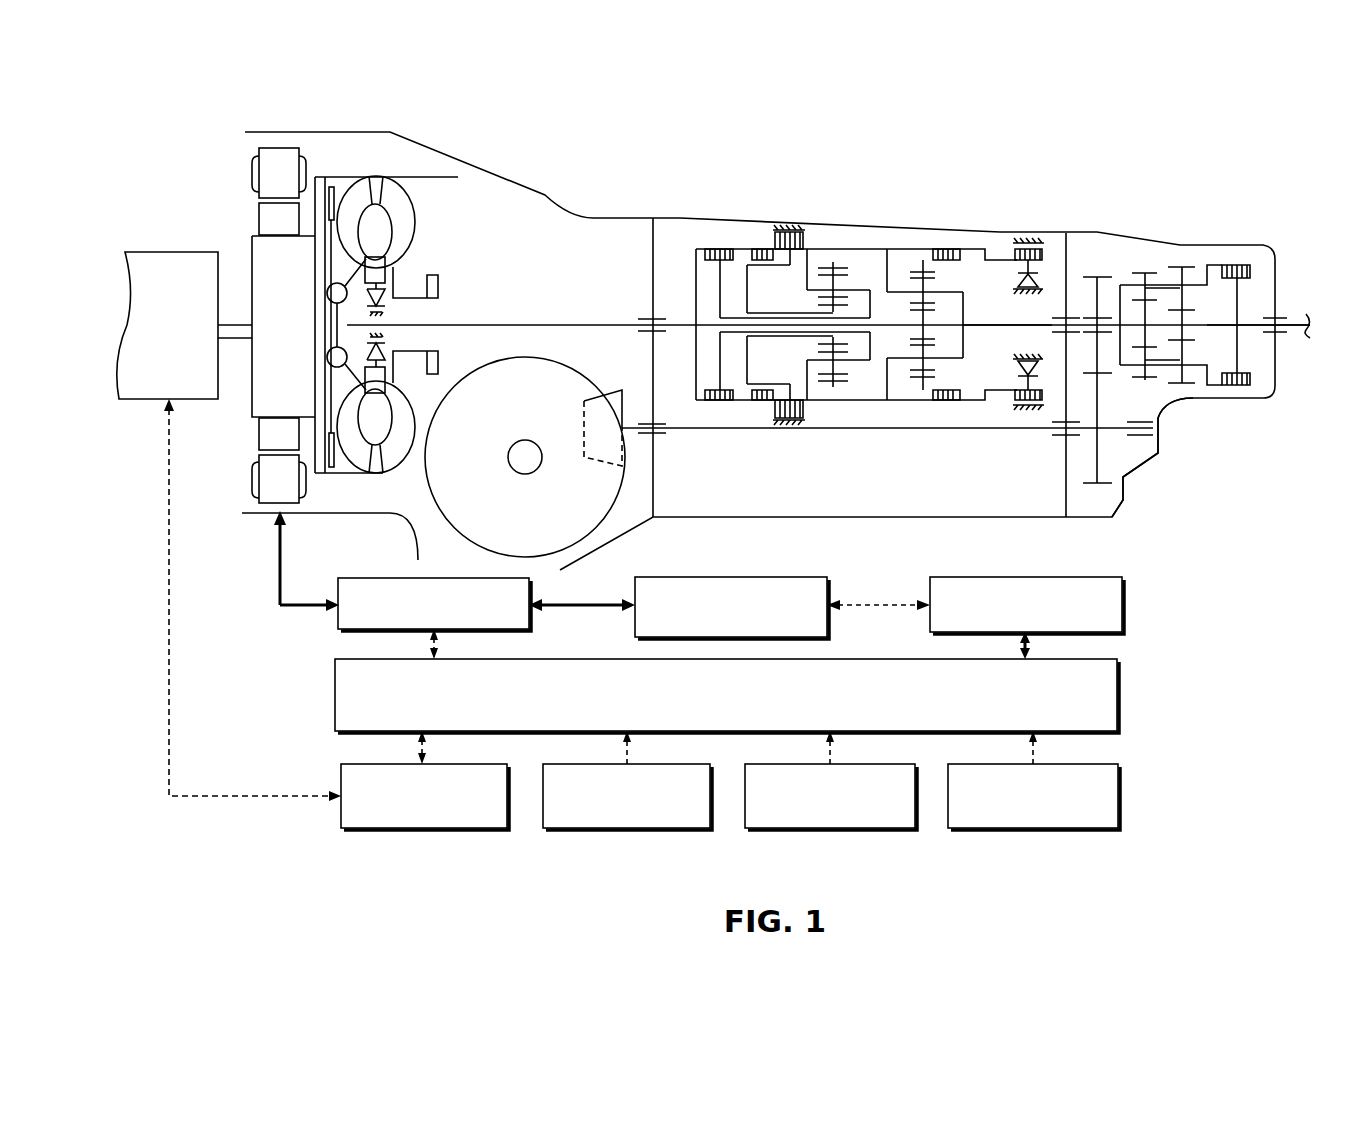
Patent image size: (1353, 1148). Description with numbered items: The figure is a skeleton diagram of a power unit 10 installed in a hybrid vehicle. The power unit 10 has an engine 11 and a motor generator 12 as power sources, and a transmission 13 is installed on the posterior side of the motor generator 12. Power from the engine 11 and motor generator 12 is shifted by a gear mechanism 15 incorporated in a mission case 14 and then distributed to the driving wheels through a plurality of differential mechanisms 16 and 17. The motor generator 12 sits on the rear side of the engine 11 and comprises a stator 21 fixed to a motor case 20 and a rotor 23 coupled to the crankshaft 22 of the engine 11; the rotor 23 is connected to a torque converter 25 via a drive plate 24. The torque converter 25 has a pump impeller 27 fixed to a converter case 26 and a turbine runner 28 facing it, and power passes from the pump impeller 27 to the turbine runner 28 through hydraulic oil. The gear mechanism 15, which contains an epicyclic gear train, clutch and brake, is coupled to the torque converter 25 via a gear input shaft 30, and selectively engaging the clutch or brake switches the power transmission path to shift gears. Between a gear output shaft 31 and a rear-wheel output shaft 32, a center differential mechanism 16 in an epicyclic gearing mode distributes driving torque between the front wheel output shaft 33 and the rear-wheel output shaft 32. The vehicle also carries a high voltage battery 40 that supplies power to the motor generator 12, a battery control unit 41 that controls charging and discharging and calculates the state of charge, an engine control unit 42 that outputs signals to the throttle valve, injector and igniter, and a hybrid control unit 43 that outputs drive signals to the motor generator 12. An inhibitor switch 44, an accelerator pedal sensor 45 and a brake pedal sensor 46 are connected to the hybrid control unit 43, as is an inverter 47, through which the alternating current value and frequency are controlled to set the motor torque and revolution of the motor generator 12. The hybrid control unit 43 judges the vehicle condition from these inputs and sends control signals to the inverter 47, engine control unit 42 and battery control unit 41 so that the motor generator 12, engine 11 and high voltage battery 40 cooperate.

The power unit 10 is at (835, 148).
The engine 11 is at (145, 250).
The motor generator 12 is at (238, 140).
The transmission 13 is at (982, 200).
The mission case 14 is at (610, 215).
The gear mechanism 15 is at (897, 235).
The center differential mechanism 16 is at (1180, 410).
The differential mechanism 17 is at (572, 350).
The motor case 20 is at (260, 131).
The stator 21 is at (258, 183).
The crankshaft 22 is at (236, 323).
The rotor 23 is at (258, 221).
The drive plate 24 is at (315, 176).
The torque converter 25 is at (405, 170).
The converter case 26 is at (350, 175).
The pump impeller 27 is at (400, 215).
The turbine runner 28 is at (362, 475).
The gear input shaft 30 is at (515, 322).
The gear output shaft 31 is at (992, 322).
The rear-wheel output shaft 32 is at (1248, 327).
The front wheel output shaft 33 is at (862, 430).
The high voltage battery 40 is at (783, 577).
The battery control unit 41 is at (1088, 577).
The engine control unit 42 is at (340, 768).
The hybrid control unit 43 is at (1122, 690).
The inhibitor switch 44 is at (550, 764).
The accelerator pedal sensor 45 is at (748, 764).
The brake pedal sensor 46 is at (1118, 768).
The inverter 47 is at (455, 578).